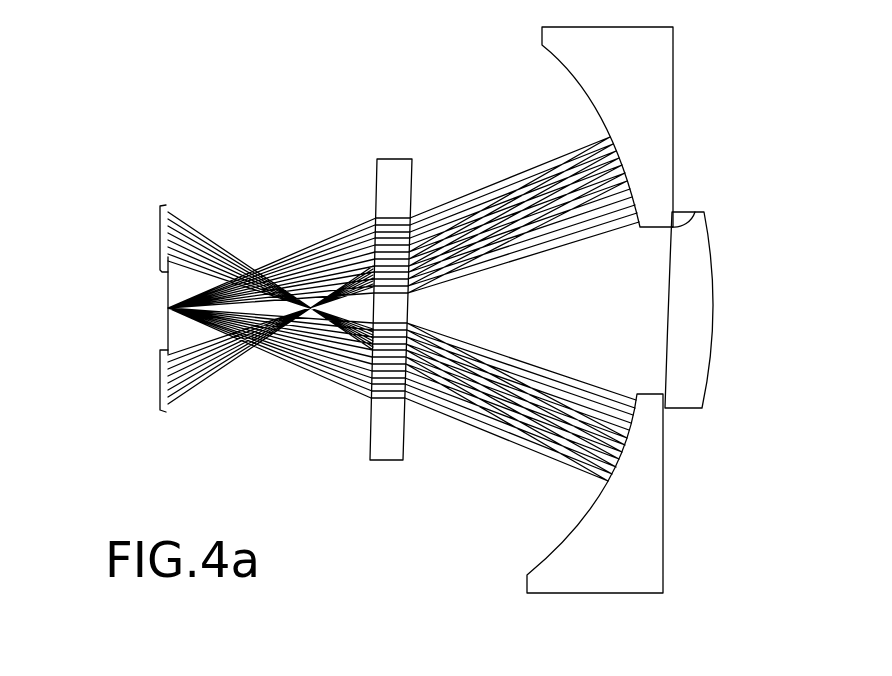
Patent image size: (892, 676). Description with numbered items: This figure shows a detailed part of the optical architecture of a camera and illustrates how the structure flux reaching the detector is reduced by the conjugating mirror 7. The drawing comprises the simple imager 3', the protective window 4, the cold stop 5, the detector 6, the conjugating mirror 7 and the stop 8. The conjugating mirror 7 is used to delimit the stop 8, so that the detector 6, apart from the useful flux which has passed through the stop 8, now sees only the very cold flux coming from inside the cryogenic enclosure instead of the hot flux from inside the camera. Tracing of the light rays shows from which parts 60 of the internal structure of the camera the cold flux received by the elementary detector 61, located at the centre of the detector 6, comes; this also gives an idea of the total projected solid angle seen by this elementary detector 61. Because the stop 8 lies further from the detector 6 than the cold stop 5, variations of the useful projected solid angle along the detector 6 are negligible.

The conjugating mirror 7 is at (603, 105).
The stop 8 is at (689, 213).
The simple imager 3' is at (715, 312).
The protective window 4 is at (391, 462).
The cold stop 5 is at (321, 390).
The parts of the internal structure of the camera 60 is at (110, 308).
The elementary detector 61 is at (168, 308).
The detector 6 is at (162, 338).